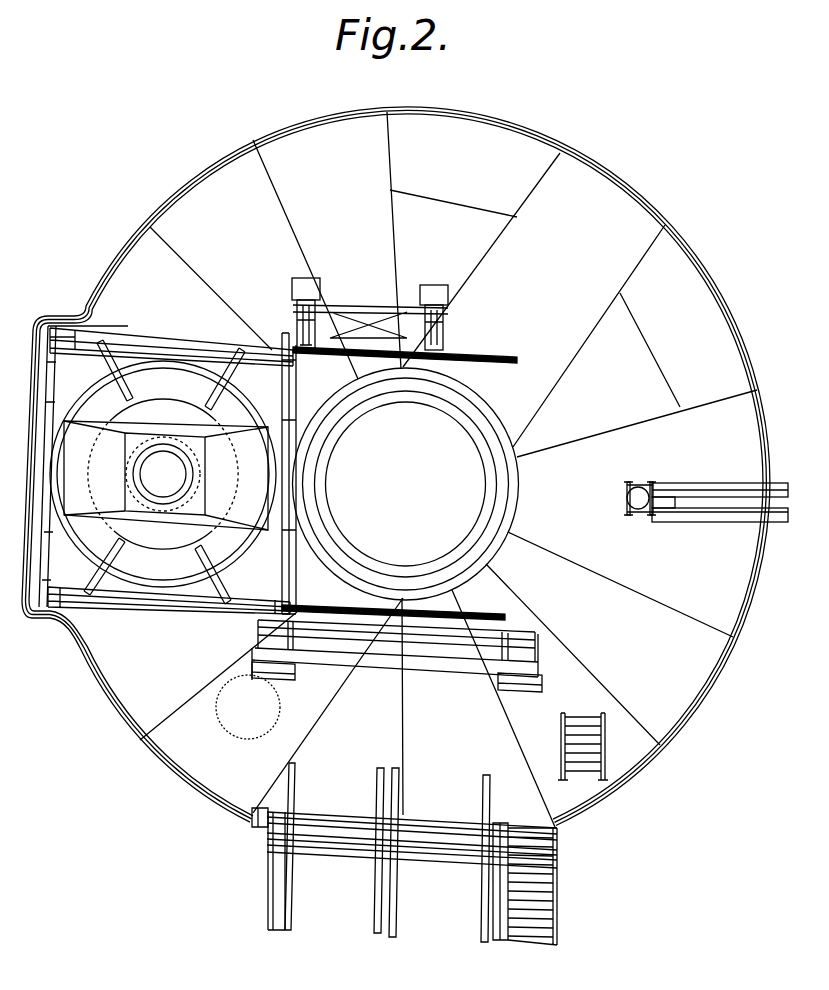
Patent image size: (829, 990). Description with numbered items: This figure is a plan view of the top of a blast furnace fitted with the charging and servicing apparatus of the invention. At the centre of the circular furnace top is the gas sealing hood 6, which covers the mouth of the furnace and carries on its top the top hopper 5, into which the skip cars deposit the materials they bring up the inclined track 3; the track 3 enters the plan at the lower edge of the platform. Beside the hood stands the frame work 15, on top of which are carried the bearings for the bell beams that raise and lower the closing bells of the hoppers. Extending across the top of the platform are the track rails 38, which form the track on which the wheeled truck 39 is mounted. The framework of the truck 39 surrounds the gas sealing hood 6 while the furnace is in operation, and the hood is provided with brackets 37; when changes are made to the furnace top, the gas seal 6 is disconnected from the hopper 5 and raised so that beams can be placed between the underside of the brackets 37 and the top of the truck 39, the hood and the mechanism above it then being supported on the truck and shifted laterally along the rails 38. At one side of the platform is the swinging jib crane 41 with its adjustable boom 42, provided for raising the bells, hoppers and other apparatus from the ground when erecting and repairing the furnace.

The inclined track 3 is at (404, 863).
The top hopper 5 is at (147, 432).
The gas sealing hood 6 is at (163, 474).
The frame work 15 is at (270, 633).
The brackets 37 is at (208, 382).
The track rails 38 is at (452, 359).
The wheeled truck 39 is at (196, 337).
The swinging jib crane 41 is at (638, 506).
The adjustable boom 42 is at (724, 510).